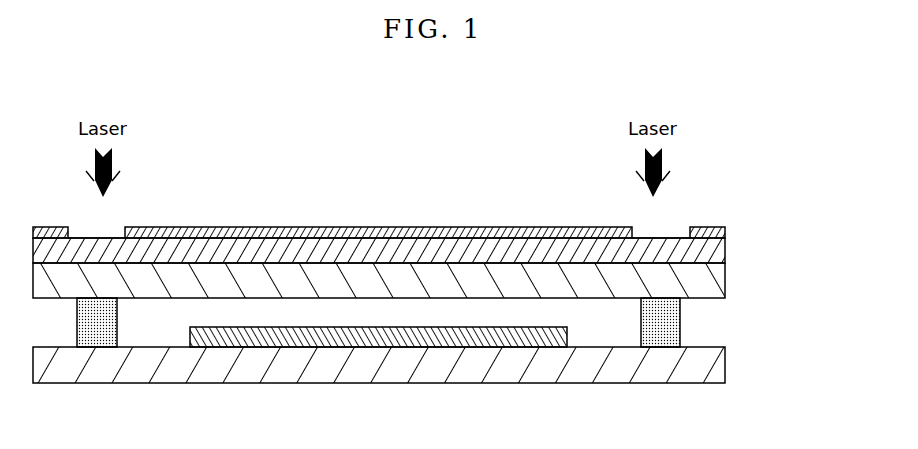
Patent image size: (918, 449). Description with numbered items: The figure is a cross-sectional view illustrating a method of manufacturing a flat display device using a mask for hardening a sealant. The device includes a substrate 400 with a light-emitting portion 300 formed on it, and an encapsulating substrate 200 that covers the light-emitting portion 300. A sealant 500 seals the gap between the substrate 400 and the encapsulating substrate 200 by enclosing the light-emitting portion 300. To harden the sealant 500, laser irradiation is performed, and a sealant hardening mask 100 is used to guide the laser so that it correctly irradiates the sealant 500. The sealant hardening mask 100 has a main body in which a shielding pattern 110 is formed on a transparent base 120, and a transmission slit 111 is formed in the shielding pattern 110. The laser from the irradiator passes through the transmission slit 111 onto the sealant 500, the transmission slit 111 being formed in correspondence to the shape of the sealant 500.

The sealant hardening mask 100 is at (438, 240).
The shielding pattern 110 is at (725, 229).
The transmission slit 111 is at (98, 227).
The transparent base 120 is at (725, 249).
The encapsulating substrate 200 is at (725, 281).
The light-emitting portion 300 is at (360, 327).
The substrate 400 is at (725, 361).
The sealant 500 is at (118, 321).